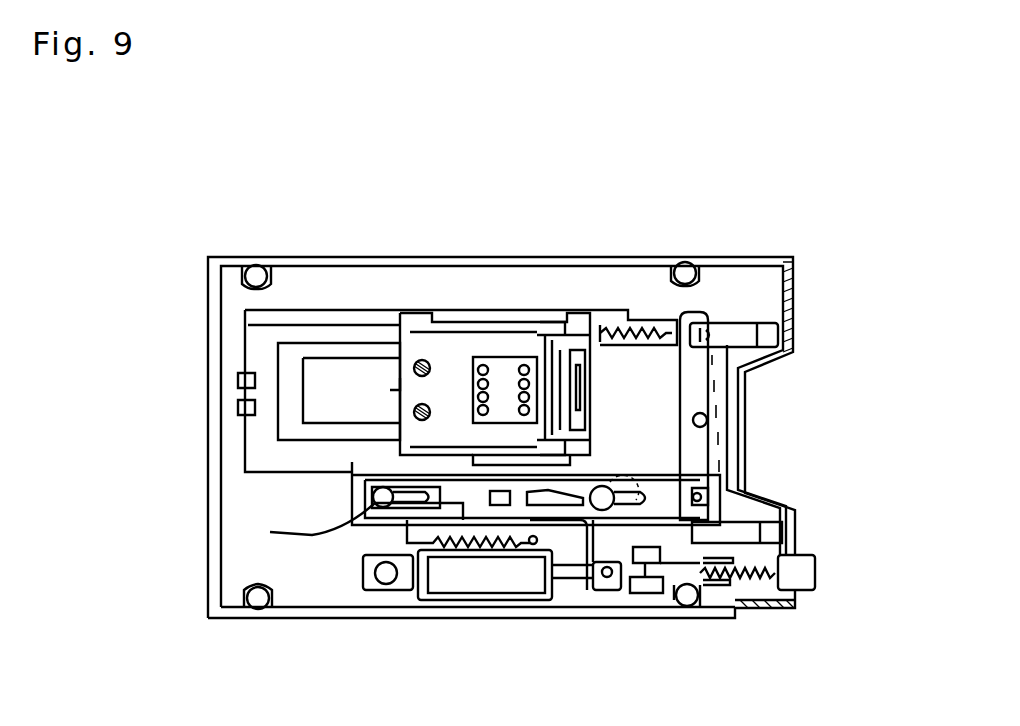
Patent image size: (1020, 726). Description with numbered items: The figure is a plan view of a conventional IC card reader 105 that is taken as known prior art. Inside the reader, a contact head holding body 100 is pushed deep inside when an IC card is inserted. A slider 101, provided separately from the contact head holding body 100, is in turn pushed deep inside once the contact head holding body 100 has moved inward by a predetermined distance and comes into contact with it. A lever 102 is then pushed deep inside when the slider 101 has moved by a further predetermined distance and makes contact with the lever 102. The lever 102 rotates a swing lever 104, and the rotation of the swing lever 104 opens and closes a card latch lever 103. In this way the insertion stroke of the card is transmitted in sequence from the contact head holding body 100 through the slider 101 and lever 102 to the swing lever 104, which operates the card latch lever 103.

The contact head holding body 100 is at (478, 348).
The slider 101 is at (270, 532).
The lever 102 is at (463, 520).
The card latch lever 103 is at (778, 338).
The swing lever 104 is at (713, 317).
The IC card reader 105 is at (256, 220).